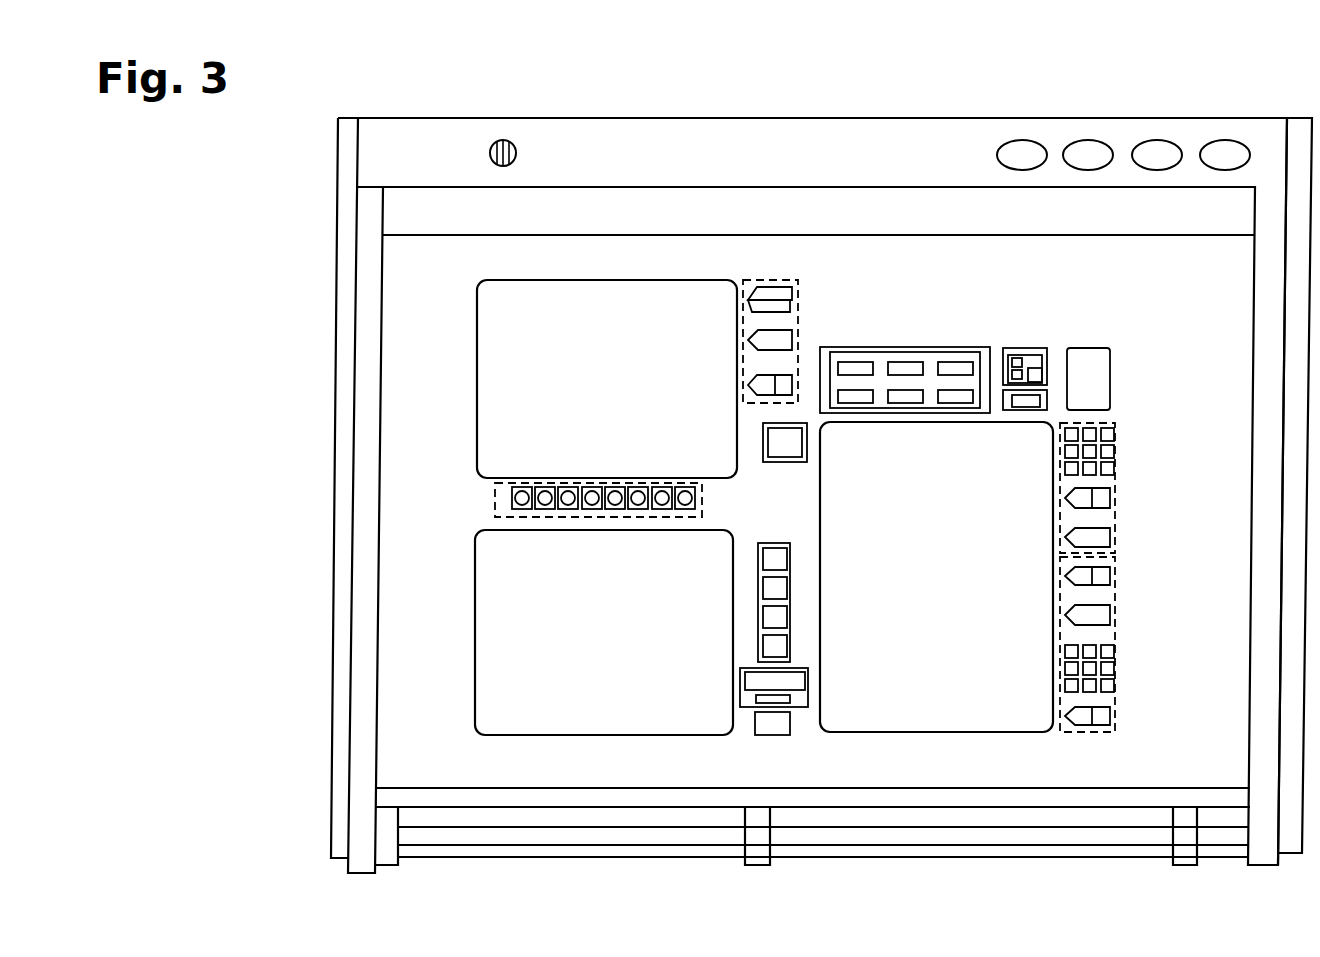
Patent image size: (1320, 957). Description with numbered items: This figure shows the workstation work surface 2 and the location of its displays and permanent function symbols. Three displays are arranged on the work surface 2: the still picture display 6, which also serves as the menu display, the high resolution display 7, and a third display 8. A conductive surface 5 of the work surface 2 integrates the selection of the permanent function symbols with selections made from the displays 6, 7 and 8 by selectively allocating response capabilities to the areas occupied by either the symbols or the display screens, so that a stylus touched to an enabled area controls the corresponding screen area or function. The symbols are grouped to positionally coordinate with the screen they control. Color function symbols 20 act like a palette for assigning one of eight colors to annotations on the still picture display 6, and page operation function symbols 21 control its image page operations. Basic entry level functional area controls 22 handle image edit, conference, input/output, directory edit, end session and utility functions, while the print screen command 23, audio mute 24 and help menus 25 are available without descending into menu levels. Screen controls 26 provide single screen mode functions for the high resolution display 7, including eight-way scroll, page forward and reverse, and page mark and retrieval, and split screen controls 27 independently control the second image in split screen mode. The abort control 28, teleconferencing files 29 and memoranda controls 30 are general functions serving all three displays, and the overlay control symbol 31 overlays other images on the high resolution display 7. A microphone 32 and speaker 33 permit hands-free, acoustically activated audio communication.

The work surface 2 is at (532, 260).
The conductive surface 5 is at (1070, 259).
The still picture display 6 is at (615, 403).
The high resolution display 7 is at (947, 622).
The display 8 is at (613, 657).
The color function symbols 20 is at (493, 507).
The page operation function symbols 21 is at (801, 331).
The basic entry level functional area controls 22 is at (917, 346).
The print screen command 23 is at (1031, 348).
The audio mute 24 is at (1016, 413).
The help menus 25 is at (1114, 389).
The screen controls 26 is at (1118, 495).
The split screen controls 27 is at (1117, 641).
The abort control 28 is at (773, 737).
The teleconferencing files 29 is at (746, 707).
The memoranda controls 30 is at (758, 621).
The overlay control symbol 31 is at (784, 464).
The microphone 32 is at (513, 140).
The speaker 33 is at (1007, 139).